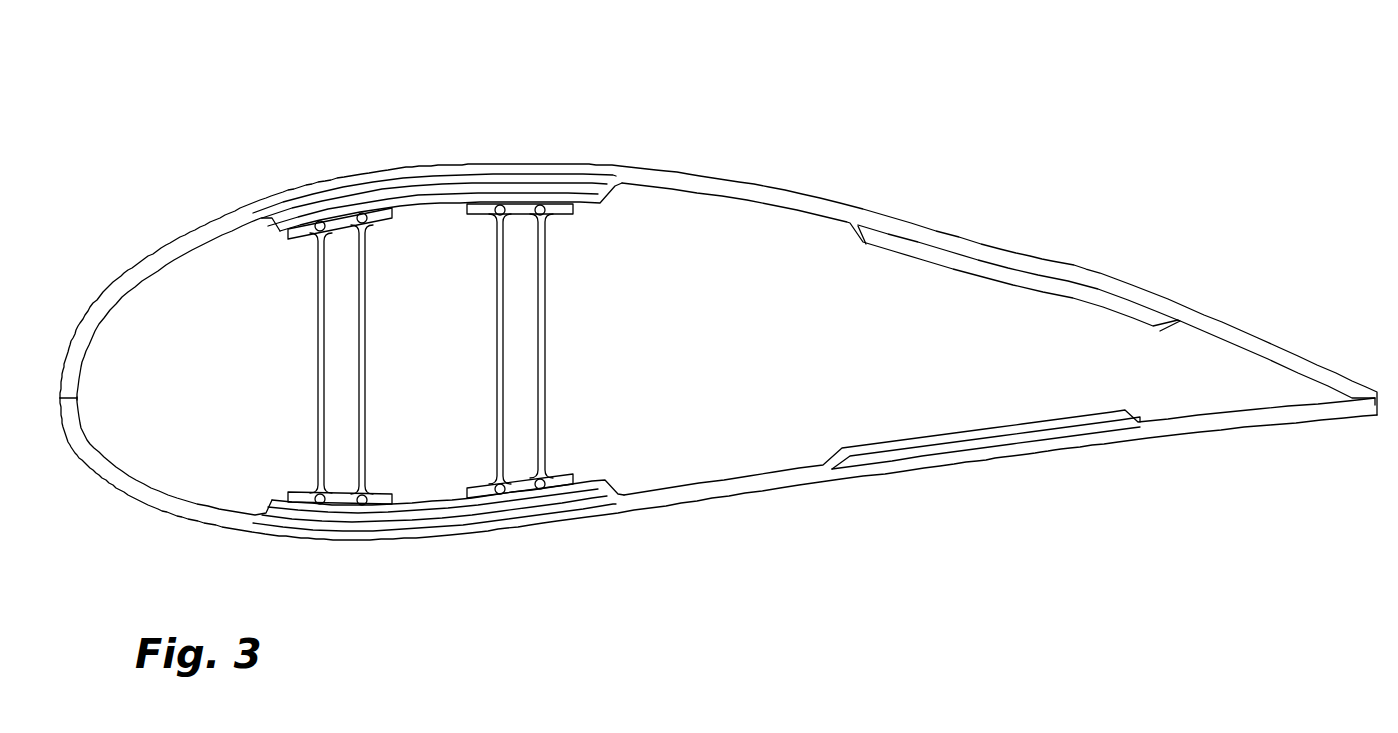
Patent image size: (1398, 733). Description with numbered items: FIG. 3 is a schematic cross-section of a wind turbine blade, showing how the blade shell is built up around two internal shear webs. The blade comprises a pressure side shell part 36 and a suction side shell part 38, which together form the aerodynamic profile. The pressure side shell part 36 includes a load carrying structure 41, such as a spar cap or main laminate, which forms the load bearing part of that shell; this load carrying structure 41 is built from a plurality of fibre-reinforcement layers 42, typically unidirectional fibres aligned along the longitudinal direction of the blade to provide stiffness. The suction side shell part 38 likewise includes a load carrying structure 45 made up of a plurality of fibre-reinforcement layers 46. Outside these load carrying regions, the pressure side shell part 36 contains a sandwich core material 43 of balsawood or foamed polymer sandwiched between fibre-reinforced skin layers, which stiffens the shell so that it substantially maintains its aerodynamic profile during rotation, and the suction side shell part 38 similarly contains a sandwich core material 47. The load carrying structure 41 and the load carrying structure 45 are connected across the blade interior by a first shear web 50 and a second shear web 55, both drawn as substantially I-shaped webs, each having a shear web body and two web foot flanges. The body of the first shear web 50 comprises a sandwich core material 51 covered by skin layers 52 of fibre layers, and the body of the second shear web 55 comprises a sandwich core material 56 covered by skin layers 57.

The pressure side shell part 36 is at (791, 494).
The suction side shell part 38 is at (768, 184).
The load carrying structure 41 is at (438, 554).
The fibre-reinforcement layers 42 is at (430, 522).
The sandwich core material 43 is at (1003, 442).
The load carrying structure 45 is at (437, 136).
The fibre-reinforcement layers 46 is at (538, 194).
The sandwich core material 47 is at (1001, 260).
The first shear web 50 is at (363, 356).
The sandwich core material 51 is at (356, 387).
The skin layers 52 is at (366, 283).
The second shear web 55 is at (556, 351).
The sandwich core material 56 is at (532, 382).
The skin layers 57 is at (545, 305).